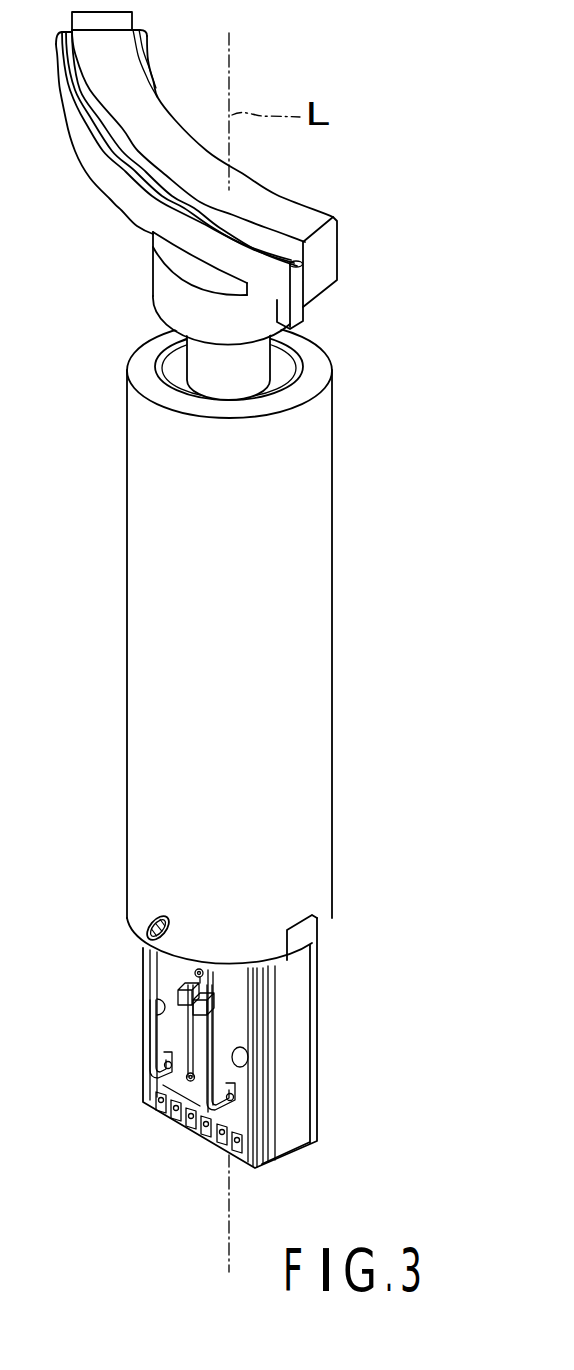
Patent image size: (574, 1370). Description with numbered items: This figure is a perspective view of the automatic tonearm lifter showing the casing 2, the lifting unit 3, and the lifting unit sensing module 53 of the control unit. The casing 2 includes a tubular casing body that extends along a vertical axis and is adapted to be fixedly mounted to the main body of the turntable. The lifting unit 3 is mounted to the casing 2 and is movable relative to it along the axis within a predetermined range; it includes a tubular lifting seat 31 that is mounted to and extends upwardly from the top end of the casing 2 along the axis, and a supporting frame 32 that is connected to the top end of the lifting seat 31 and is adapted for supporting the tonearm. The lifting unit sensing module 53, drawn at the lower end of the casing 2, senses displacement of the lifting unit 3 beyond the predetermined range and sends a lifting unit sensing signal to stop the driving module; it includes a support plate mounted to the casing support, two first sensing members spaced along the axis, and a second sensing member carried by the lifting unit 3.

The casing 2 is at (338, 688).
The lifting unit 3 is at (273, 206).
The lifting seat 31 is at (255, 372).
The supporting frame 32 is at (249, 178).
The lifting unit sensing module 53 is at (122, 1024).